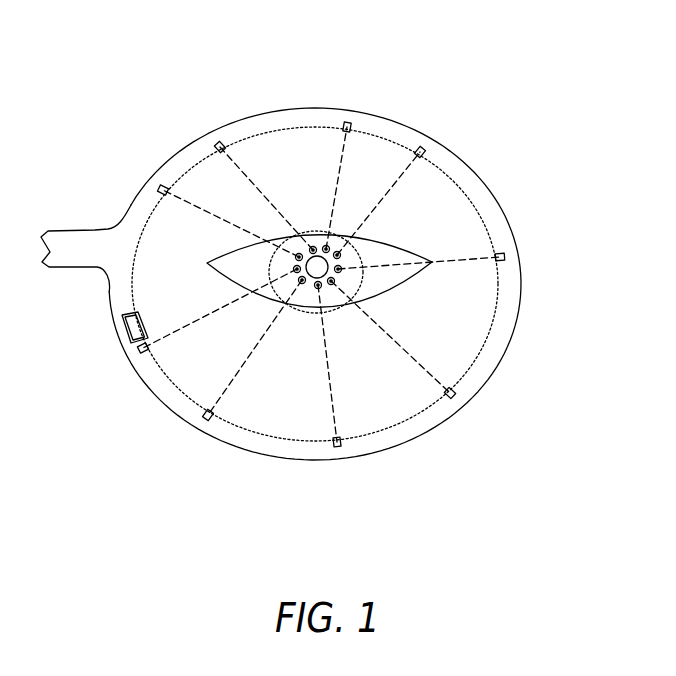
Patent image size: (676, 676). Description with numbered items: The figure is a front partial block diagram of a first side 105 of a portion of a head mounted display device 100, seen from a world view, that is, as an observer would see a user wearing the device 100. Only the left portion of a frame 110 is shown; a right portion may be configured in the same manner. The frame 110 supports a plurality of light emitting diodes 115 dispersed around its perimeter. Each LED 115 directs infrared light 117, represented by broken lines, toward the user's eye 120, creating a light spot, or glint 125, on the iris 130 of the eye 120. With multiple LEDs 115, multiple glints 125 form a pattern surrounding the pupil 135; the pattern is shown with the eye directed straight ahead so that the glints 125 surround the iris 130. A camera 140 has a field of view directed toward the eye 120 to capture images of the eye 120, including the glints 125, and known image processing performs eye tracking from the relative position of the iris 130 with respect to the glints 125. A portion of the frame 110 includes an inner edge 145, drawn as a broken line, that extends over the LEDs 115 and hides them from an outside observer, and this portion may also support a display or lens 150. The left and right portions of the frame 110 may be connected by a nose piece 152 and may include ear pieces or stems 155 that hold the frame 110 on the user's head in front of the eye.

The head mounted display device 100 is at (586, 63).
The first side 105 is at (390, 131).
The frame 110 is at (189, 146).
The light emitting diode 115 is at (219, 143).
The infrared light 117 is at (178, 200).
The eye 120 is at (228, 252).
The glint 125 is at (386, 319).
The iris 130 is at (363, 281).
The pupil 135 is at (395, 240).
The camera 140 is at (122, 323).
The inner edge 145 is at (262, 133).
The display or lens 150 is at (317, 135).
The nose piece 152 is at (83, 227).
The stem 155 is at (511, 223).